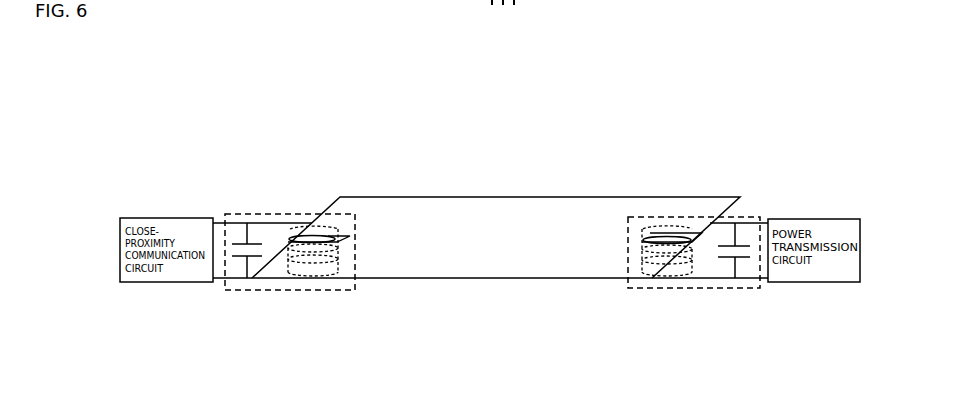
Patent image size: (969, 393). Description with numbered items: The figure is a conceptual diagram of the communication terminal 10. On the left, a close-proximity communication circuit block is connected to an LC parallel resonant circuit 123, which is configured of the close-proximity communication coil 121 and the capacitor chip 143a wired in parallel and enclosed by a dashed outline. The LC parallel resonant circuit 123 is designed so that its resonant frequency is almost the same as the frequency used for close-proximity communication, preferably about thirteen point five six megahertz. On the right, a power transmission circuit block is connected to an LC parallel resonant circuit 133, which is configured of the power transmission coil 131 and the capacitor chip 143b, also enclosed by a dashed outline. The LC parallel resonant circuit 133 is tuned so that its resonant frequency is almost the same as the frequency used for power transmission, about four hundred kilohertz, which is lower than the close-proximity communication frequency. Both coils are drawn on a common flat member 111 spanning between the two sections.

The communication terminal 10 is at (709, 158).
The substrate / plane 111 is at (574, 201).
The close-proximity communication coil 121 is at (290, 222).
The LC parallel resonant circuit 123 is at (282, 295).
The power transmission coil 131 is at (667, 280).
The LC parallel resonant circuit 133 is at (702, 295).
The capacitor chip 143a is at (237, 257).
The capacitor chip 143b is at (743, 258).